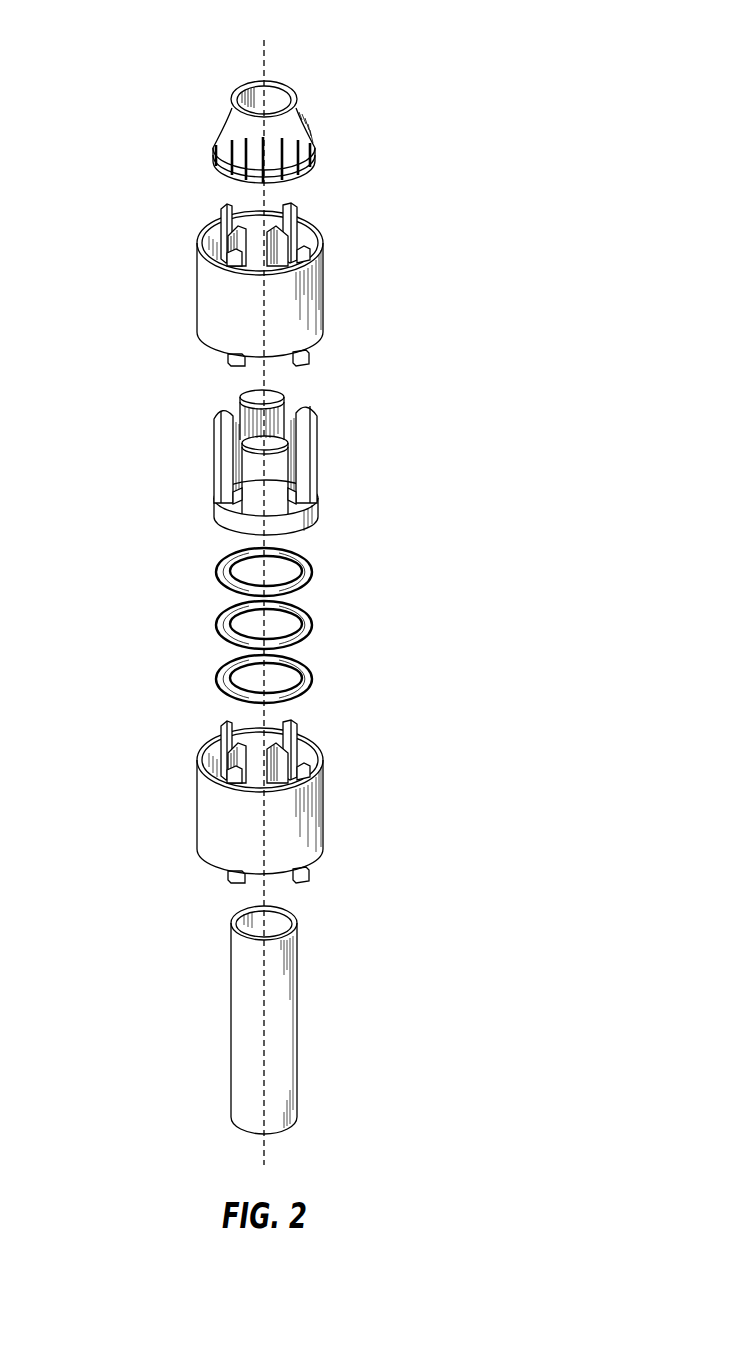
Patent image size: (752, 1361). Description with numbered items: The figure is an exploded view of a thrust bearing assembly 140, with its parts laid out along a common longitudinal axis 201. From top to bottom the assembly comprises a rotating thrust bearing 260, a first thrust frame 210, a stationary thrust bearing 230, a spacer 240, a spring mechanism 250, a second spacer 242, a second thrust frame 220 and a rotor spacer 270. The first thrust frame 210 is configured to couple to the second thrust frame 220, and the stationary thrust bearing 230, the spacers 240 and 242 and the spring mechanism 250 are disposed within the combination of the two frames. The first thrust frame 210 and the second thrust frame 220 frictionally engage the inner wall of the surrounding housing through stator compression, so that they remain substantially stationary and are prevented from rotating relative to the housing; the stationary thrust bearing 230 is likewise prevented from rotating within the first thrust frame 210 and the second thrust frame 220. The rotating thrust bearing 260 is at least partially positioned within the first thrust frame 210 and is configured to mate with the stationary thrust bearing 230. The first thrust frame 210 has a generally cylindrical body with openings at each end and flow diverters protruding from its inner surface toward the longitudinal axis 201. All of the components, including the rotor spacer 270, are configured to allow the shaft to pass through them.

The thrust bearing assembly 140 is at (134, 70).
The longitudinal axis 201 is at (266, 58).
The rotating thrust bearing 260 is at (316, 139).
The first thrust frame 210 is at (326, 290).
The stationary thrust bearing 230 is at (316, 464).
The spacer 240 is at (313, 572).
The spring mechanism 250 is at (313, 625).
The spacer 242 is at (313, 678).
The second thrust frame 220 is at (326, 806).
The rotor spacer 270 is at (298, 1019).